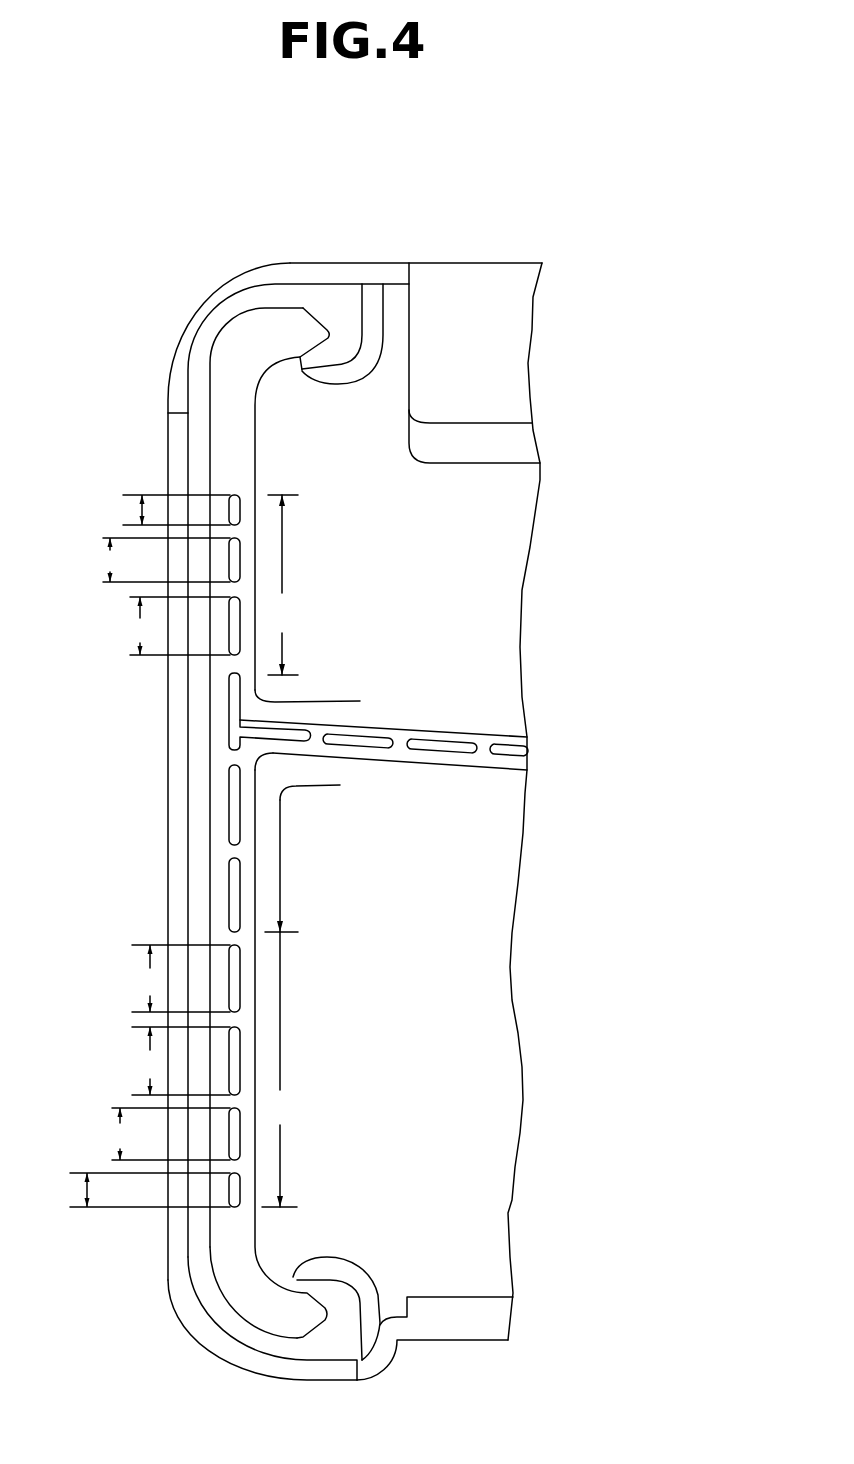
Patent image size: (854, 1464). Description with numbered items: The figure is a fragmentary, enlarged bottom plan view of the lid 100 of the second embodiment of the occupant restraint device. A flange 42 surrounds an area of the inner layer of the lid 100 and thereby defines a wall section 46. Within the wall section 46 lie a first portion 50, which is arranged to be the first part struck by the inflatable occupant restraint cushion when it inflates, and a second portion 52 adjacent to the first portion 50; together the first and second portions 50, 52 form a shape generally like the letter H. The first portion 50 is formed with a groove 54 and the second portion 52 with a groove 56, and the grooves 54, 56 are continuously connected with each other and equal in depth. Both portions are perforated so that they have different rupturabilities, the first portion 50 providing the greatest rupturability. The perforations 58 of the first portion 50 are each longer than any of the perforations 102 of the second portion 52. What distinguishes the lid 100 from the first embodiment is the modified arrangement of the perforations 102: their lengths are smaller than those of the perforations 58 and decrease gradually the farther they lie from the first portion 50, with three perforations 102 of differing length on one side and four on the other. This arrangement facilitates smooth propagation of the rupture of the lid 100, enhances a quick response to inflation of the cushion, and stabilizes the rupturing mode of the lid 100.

The lid 100 is at (331, 243).
The flange 42 is at (168, 434).
The wall section 46 is at (412, 555).
The first portion 50 is at (520, 707).
The second portion 52 is at (282, 851).
The groove 54 is at (431, 762).
The groove 56 is at (263, 505).
The perforations 58 is at (458, 733).
The perforations 102 is at (258, 460).